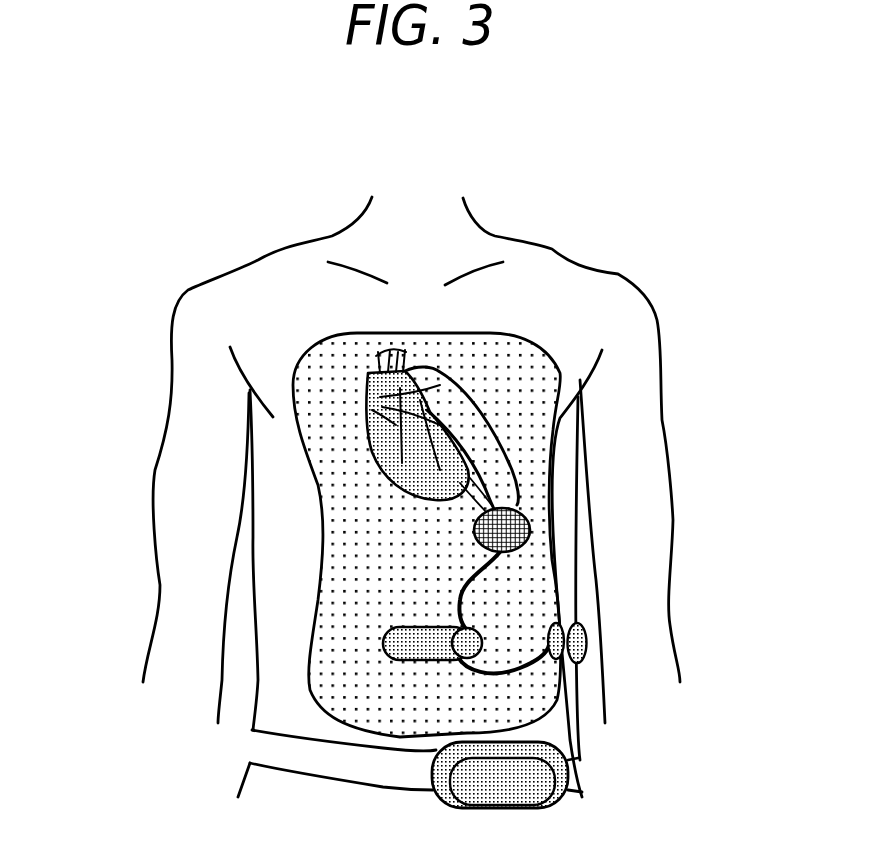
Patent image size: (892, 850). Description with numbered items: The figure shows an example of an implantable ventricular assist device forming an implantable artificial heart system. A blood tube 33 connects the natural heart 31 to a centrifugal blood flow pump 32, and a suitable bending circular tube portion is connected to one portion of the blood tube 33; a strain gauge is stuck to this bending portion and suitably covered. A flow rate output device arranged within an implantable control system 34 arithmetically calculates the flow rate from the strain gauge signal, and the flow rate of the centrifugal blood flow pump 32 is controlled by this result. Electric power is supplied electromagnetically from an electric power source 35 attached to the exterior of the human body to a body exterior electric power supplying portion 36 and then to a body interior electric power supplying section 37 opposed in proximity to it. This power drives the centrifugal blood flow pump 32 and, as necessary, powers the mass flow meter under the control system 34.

The natural heart 31 is at (390, 457).
The centrifugal blood flow pump 32 is at (530, 530).
The blood tube 33 is at (493, 440).
The implantable control system 34 is at (473, 627).
The electric power source 35 is at (552, 783).
The body exterior electric power supplying portion 36 is at (587, 650).
The body interior electric power supplying section 37 is at (556, 622).